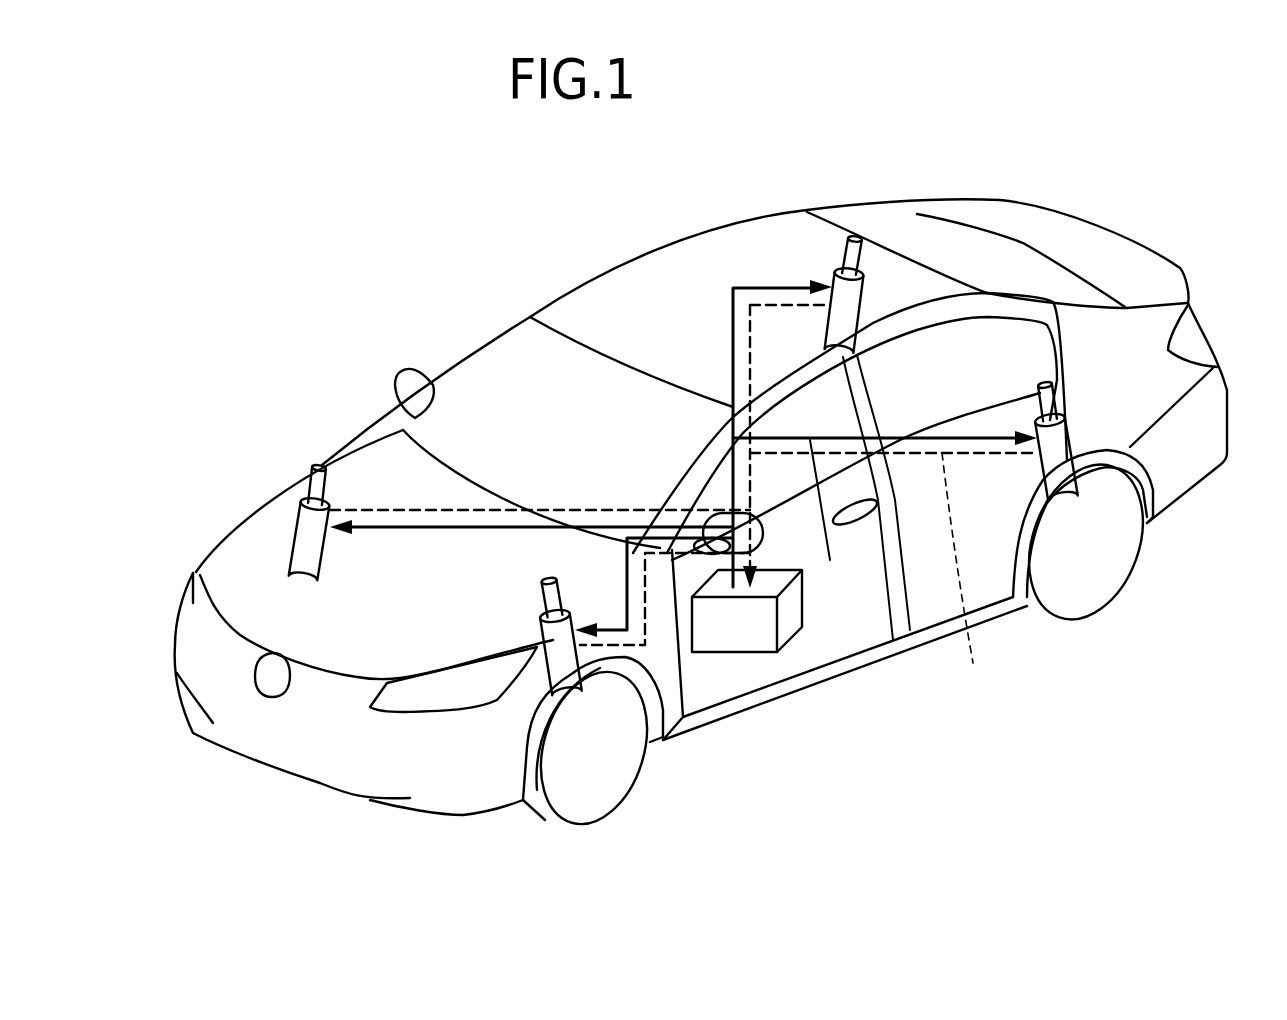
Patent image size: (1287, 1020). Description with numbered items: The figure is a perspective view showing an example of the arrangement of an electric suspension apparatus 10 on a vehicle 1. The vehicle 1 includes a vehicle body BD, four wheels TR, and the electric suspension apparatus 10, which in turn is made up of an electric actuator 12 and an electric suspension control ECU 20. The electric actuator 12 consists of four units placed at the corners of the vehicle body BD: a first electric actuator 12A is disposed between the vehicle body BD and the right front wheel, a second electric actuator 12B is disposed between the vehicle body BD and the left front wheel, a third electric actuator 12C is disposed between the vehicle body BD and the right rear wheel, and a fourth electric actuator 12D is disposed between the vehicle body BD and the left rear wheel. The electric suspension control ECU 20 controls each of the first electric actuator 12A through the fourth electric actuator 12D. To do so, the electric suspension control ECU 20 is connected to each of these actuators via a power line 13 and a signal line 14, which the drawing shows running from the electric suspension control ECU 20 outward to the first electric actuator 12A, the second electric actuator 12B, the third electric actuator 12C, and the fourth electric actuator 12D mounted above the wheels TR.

The vehicle 1 is at (810, 122).
The electric suspension apparatus 10 is at (655, 459).
The electric actuator 12 is at (679, 513).
The first electric actuator 12A is at (280, 538).
The second electric actuator 12B is at (537, 695).
The third electric actuator 12C is at (888, 284).
The fourth electric actuator 12D is at (1090, 428).
The power line 13 is at (830, 560).
The signal line 14 is at (964, 574).
The electric suspension control ECU 20 is at (737, 657).
The vehicle body BD is at (650, 263).
The wheel TR is at (587, 803).